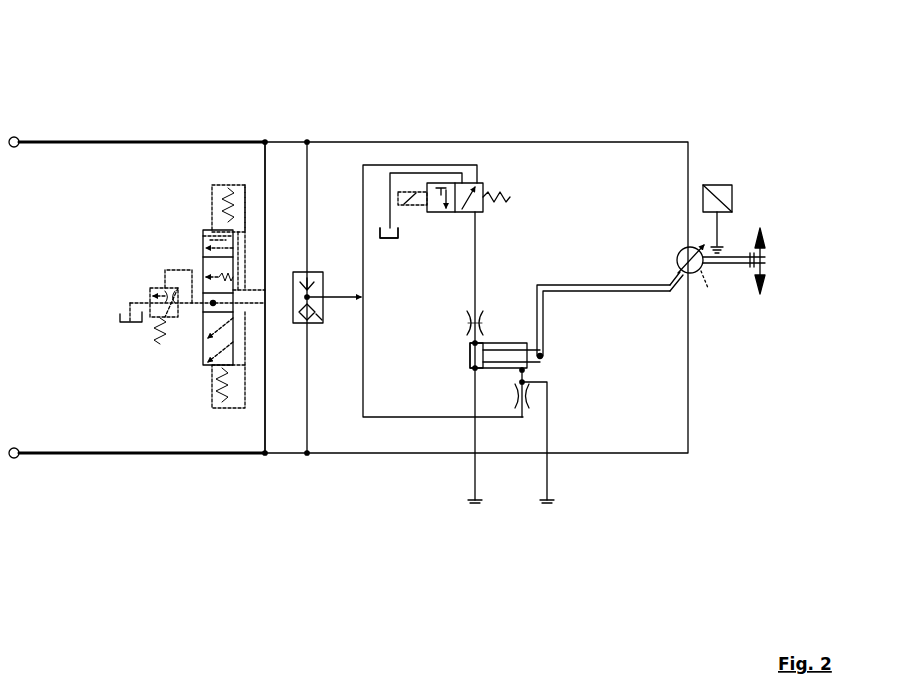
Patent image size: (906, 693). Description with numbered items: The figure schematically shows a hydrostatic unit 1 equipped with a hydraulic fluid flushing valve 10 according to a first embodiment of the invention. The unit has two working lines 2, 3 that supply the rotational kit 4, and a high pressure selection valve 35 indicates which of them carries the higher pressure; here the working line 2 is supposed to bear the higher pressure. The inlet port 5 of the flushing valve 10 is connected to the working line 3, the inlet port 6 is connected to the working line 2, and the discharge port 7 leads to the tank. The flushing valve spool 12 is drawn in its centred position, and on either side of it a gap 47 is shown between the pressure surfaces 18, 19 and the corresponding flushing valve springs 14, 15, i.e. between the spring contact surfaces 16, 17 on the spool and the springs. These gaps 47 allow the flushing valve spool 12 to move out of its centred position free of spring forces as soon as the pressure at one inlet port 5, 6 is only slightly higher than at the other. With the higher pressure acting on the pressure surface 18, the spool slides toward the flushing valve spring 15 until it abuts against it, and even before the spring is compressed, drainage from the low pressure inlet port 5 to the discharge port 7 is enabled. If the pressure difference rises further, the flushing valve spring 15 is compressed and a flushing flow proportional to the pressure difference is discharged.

The hydraulic system 1 is at (724, 76).
The working line 2 is at (121, 141).
The working line 3 is at (128, 454).
The rotational kit 4 is at (678, 253).
The inlet port 5 is at (232, 304).
The inlet port 6 is at (232, 288).
The discharge port 7 is at (208, 302).
The hydraulic fluid flushing valve 10 is at (182, 259).
The flushing valve spool 12 is at (210, 267).
The flushing valve spring 14 is at (227, 198).
The flushing valve spring 15 is at (225, 393).
The spring contact surface 16 is at (220, 230).
The spring contact surface 17 is at (223, 366).
The pressure surface 18 is at (212, 228).
The pressure surface 19 is at (215, 362).
The high pressure selection valve 35 is at (316, 312).
The gap 47 is at (229, 223).